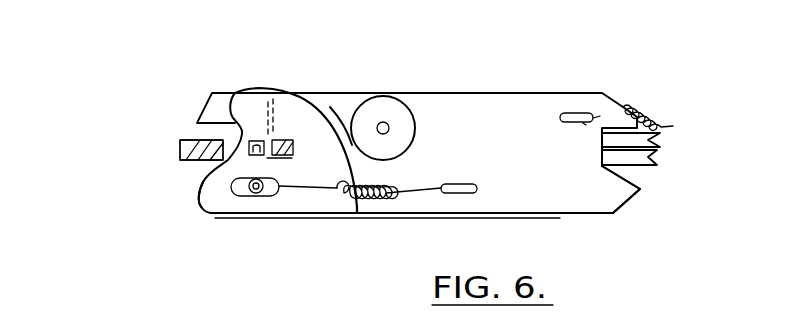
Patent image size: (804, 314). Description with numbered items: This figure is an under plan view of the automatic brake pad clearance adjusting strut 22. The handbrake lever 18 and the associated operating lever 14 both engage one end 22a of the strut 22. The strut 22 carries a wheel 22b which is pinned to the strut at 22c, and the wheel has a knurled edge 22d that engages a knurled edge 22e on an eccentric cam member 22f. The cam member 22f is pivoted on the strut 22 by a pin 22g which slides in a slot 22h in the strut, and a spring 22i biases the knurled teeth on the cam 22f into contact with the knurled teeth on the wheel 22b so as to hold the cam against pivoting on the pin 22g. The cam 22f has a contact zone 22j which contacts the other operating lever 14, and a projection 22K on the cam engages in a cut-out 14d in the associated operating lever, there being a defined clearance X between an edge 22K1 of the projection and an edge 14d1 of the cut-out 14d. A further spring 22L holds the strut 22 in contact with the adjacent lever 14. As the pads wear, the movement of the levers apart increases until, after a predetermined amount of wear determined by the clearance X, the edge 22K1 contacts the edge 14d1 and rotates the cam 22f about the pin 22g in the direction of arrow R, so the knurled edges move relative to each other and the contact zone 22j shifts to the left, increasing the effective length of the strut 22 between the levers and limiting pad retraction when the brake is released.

The brake pad clearance adjusting strut 22 is at (453, 110).
The one end of the strut 22a is at (607, 187).
The wheel 22b is at (397, 147).
The pin location of the wheel 22c is at (384, 122).
The knurled edge of the wheel 22d is at (342, 122).
The knurled edge of the cam member 22e is at (318, 93).
The eccentric cam member 22f is at (300, 197).
The pin 22g is at (256, 194).
The slot 22h is at (228, 196).
The spring 22i is at (397, 188).
The contact zone 22j is at (187, 160).
The projection 22K is at (230, 167).
The edge of the projection 22K1 is at (233, 93).
The spring 22L is at (657, 103).
The operating lever 14 is at (183, 143).
The cut-out 14d is at (285, 169).
The edge of the cut-out 14d1 is at (287, 127).
The handbrake lever 18 is at (656, 145).
The clearance X is at (263, 130).
The arrow indicating rotation R is at (290, 193).